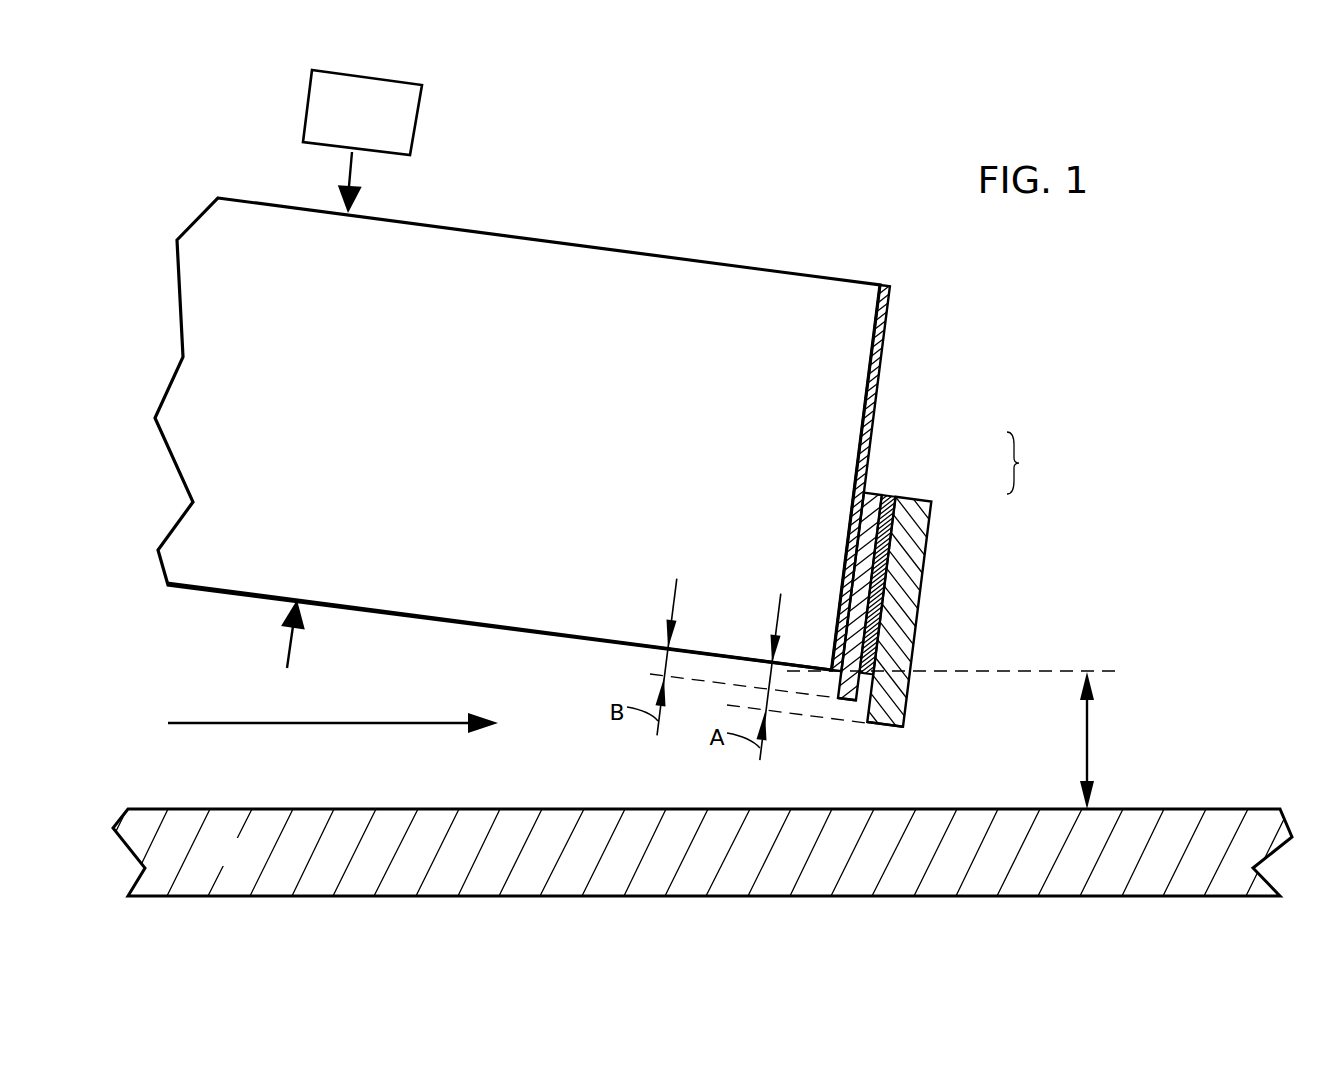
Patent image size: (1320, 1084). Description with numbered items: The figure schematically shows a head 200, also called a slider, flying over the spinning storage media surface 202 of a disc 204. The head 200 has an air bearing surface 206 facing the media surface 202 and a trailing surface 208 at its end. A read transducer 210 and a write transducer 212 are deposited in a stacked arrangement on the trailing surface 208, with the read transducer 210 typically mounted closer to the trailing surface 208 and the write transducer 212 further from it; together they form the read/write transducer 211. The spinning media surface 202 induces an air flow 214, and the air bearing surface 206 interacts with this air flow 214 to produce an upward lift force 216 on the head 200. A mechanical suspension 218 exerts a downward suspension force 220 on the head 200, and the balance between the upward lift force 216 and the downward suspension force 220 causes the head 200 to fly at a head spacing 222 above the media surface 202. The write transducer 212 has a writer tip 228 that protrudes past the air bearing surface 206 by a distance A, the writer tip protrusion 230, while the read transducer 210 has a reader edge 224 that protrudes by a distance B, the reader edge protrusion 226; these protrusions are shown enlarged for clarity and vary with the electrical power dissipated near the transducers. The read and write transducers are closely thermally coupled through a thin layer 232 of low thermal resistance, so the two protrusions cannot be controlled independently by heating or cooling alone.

The head 200 is at (301, 385).
The storage media surface 202 is at (358, 808).
The disc 204 is at (210, 865).
The air bearing surface 206 is at (410, 619).
The trailing surface 208 is at (873, 391).
The read transducer 210 is at (868, 492).
The read/write transducer 211 is at (1038, 463).
The write transducer 212 is at (915, 497).
The air flow 214 is at (337, 723).
The upward lift force 216 is at (287, 648).
The mechanical suspension 218 is at (341, 133).
The downward suspension force 220 is at (357, 170).
The head spacing 222 is at (1088, 744).
The reader edge 224 is at (843, 703).
The reader edge protrusion 226 is at (665, 661).
The writer tip 228 is at (889, 729).
The writer tip protrusion 230 is at (777, 681).
The thin layer 232 is at (893, 518).